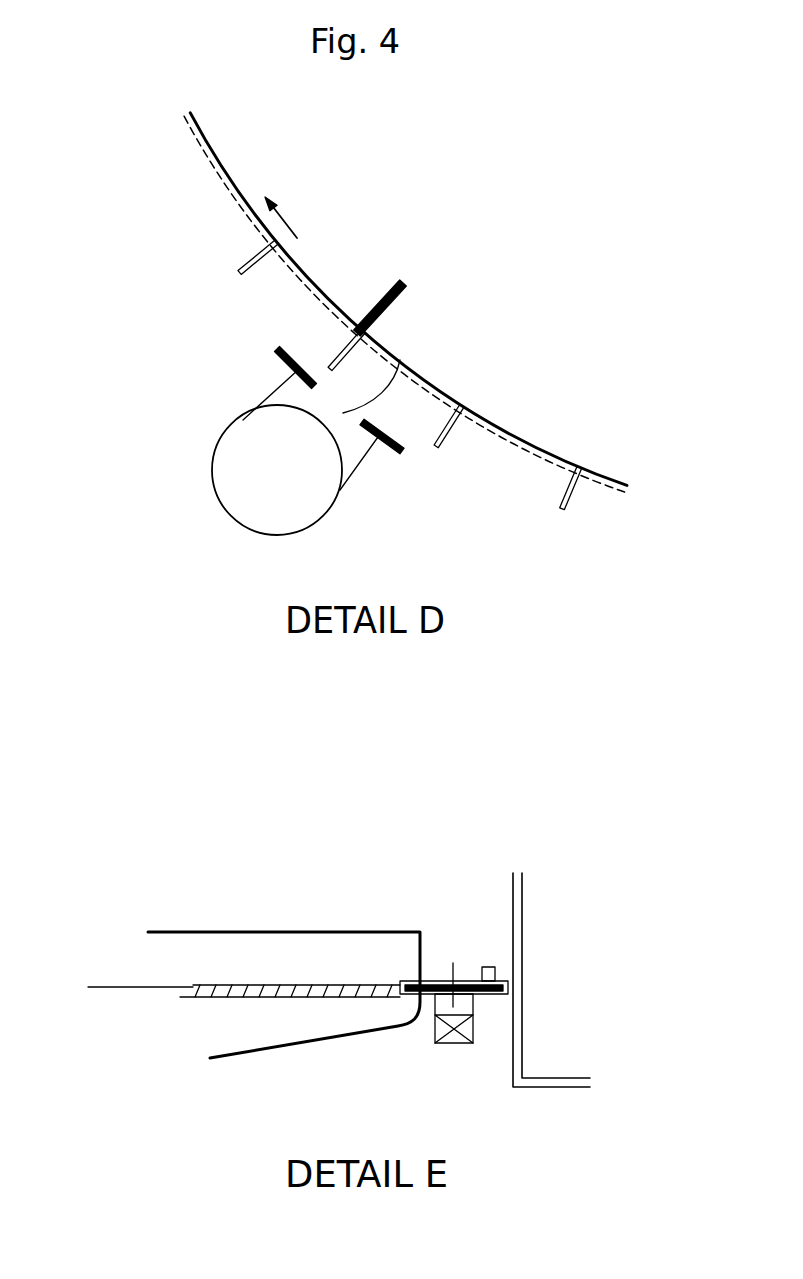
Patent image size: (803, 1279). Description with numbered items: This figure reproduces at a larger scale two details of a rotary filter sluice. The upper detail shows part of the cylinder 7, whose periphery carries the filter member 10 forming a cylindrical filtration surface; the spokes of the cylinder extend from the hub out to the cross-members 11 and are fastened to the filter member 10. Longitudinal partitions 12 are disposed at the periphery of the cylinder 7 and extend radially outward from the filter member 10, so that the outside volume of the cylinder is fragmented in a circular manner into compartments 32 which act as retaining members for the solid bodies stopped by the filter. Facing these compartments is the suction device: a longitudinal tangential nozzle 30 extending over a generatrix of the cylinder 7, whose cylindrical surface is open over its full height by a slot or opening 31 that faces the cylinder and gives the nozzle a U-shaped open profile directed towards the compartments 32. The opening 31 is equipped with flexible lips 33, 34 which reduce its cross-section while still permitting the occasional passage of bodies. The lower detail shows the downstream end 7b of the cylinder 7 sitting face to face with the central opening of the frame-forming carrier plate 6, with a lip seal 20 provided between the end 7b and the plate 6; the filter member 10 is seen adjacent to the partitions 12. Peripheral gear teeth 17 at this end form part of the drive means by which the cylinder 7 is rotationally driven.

The cylinder 7 is at (213, 143).
The filter member 10 is at (544, 452).
The cross-members 11 is at (407, 290).
The longitudinal partitions 12 is at (568, 500).
The longitudinal tangential nozzle 30 is at (227, 478).
The slot or opening 31 is at (397, 363).
The compartments 32 is at (280, 303).
The flexible lip 33 is at (277, 357).
The flexible lip 34 is at (383, 447).
The carrier plate 6 is at (518, 917).
The downstream end 7b is at (493, 995).
The peripheral gear teeth 17 is at (440, 1043).
The lip seal 20 is at (508, 966).